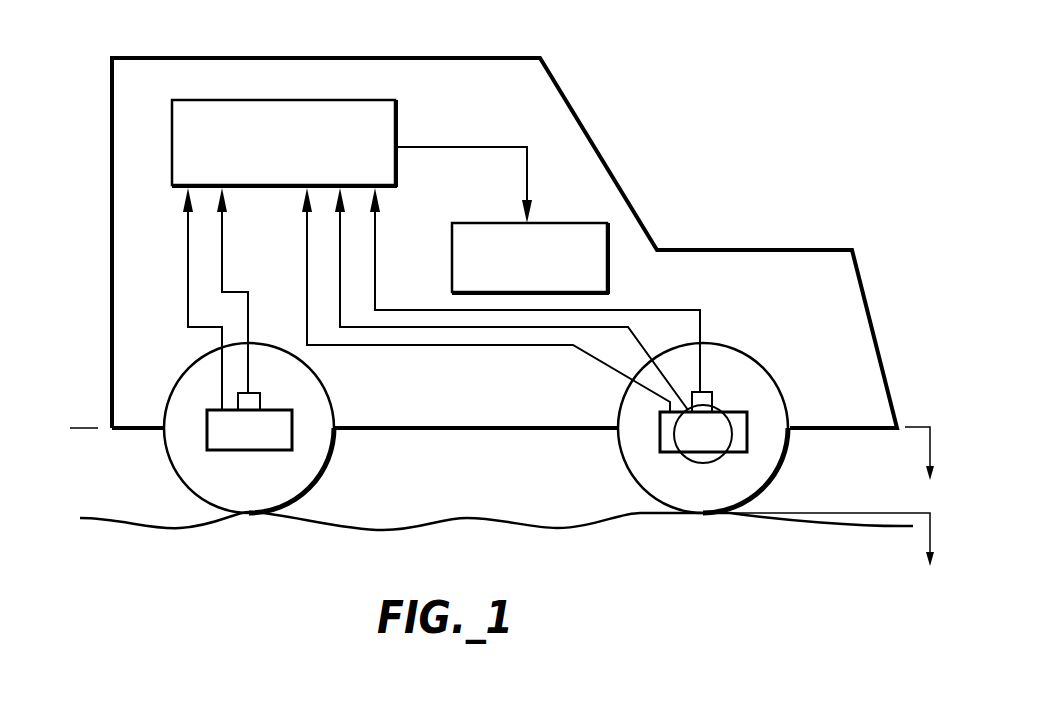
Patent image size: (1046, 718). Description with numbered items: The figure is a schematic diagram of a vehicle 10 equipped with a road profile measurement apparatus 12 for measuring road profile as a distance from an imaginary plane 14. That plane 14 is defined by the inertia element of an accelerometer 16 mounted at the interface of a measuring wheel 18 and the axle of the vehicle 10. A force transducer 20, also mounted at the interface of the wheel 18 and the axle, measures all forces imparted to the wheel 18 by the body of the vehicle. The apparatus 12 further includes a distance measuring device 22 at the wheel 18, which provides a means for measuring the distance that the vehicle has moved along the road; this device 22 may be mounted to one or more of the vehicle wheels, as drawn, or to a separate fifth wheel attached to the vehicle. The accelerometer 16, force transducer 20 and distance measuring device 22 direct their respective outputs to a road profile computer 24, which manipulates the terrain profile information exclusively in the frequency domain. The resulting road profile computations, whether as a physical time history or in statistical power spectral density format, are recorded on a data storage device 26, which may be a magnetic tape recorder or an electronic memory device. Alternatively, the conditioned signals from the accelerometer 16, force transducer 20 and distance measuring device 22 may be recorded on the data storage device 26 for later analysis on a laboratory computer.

The vehicle 10 is at (600, 138).
The road profile measurement apparatus 12 is at (184, 72).
The imaginary plane 14 is at (905, 430).
The accelerometer 16 is at (262, 401).
The measuring wheel 18 is at (178, 378).
The force transducer 20 is at (207, 432).
The distance measuring device 22 is at (680, 458).
The road profile computer 24 is at (397, 112).
The data storage device 26 is at (543, 223).